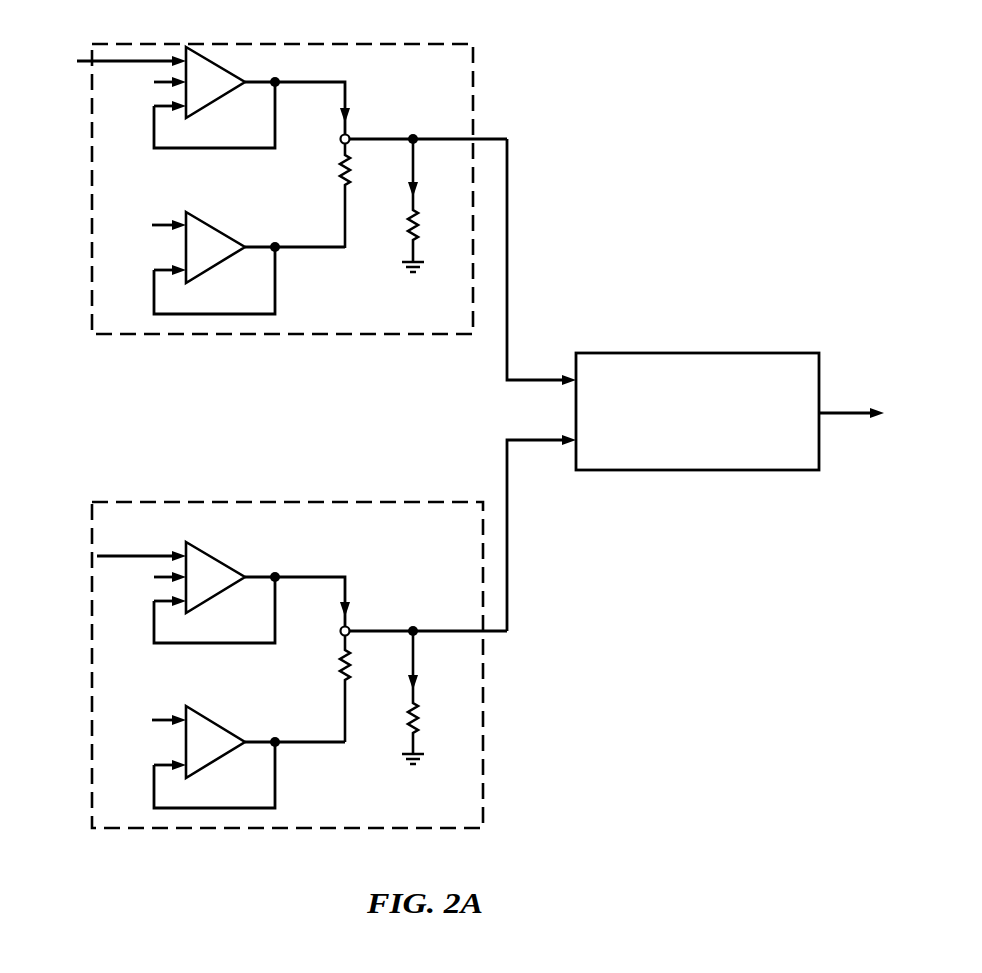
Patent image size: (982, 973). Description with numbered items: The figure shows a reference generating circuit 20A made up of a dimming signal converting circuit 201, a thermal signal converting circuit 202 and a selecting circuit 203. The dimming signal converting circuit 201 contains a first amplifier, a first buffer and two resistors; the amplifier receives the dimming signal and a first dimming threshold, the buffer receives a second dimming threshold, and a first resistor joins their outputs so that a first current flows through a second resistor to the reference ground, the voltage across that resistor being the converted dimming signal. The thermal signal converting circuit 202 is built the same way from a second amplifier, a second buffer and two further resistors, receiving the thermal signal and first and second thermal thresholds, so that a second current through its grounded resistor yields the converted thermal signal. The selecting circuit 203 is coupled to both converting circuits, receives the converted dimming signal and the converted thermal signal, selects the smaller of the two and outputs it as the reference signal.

The reference generating circuit 20A is at (731, 162).
The dimming signal converting circuit 201 is at (256, 334).
The thermal signal converting circuit 202 is at (265, 828).
The selecting circuit 203 is at (696, 353).